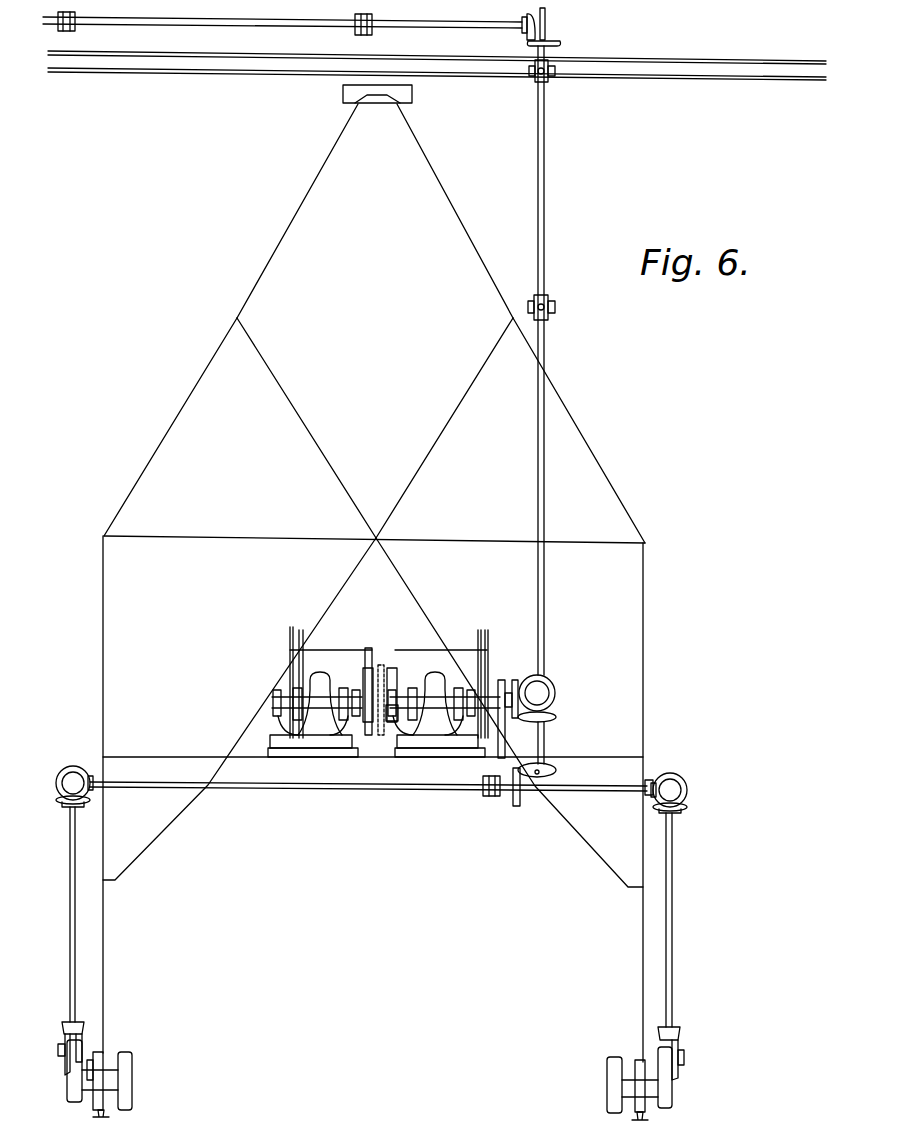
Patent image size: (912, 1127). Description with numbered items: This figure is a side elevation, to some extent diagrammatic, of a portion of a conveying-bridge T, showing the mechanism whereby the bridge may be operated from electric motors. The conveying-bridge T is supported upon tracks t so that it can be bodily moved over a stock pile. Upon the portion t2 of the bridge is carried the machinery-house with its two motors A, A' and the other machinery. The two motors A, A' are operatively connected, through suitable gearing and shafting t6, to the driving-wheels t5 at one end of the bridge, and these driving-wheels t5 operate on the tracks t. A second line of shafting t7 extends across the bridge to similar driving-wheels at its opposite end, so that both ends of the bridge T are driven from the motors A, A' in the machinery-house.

The conveying-bridge T is at (643, 658).
The portion of the bridge t2 is at (185, 756).
The second line of shafting t7 is at (572, 688).
The shafting t6 is at (688, 918).
The driving-wheels t5 is at (100, 1056).
The tracks t is at (114, 1113).
The motor A is at (333, 688).
The motor A' is at (446, 685).